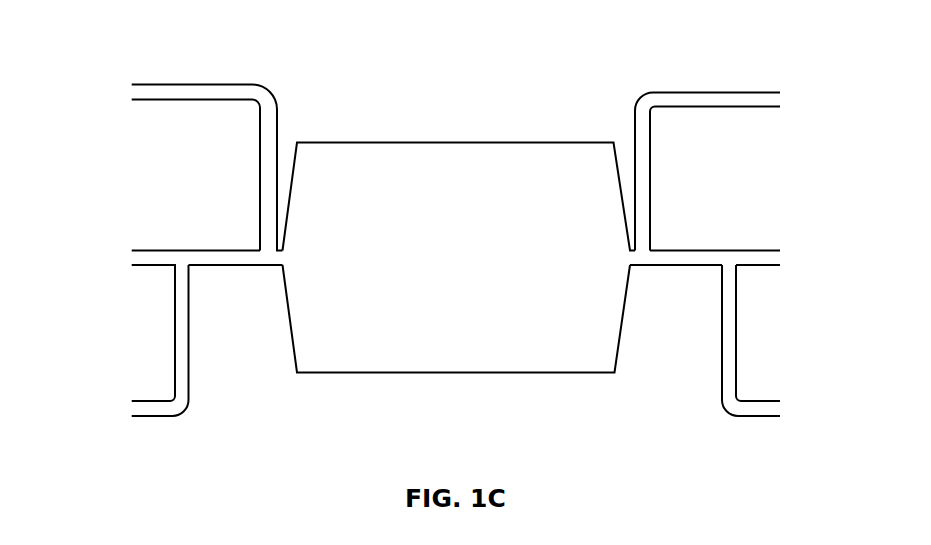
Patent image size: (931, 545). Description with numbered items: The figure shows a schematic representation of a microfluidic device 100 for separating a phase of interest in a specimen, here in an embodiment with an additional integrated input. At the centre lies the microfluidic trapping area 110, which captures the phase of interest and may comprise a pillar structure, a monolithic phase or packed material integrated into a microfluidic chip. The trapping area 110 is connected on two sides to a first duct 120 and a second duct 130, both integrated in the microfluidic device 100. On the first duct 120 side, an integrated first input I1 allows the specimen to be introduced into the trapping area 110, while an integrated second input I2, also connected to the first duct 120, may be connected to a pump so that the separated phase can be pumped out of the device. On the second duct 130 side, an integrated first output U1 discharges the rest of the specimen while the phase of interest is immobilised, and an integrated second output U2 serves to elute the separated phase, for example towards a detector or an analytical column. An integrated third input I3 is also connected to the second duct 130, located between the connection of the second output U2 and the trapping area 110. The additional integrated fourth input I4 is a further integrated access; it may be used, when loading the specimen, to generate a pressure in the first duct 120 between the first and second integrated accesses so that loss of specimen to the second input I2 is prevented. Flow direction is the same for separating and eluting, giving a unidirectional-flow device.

The microfluidic device 100 is at (138, 63).
The microfluidic trapping area 110 is at (426, 293).
The first duct 120 is at (210, 257).
The second duct 130 is at (671, 257).
The integrated first input I1 is at (211, 92).
The integrated second input I2 is at (123, 243).
The integrated third input I3 is at (728, 343).
The integrated fourth input I4 is at (182, 368).
The integrated first output U1 is at (663, 98).
The integrated second output U2 is at (787, 255).